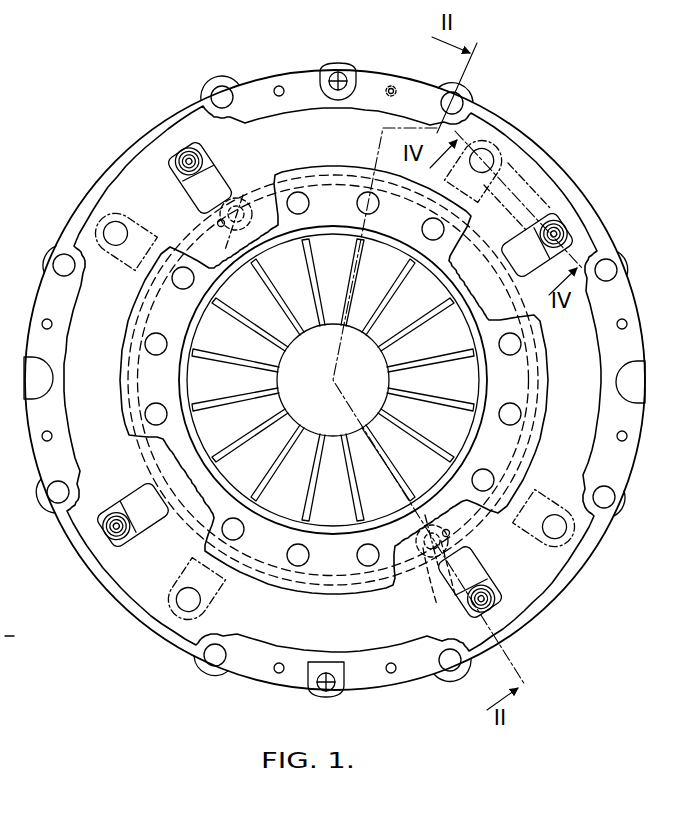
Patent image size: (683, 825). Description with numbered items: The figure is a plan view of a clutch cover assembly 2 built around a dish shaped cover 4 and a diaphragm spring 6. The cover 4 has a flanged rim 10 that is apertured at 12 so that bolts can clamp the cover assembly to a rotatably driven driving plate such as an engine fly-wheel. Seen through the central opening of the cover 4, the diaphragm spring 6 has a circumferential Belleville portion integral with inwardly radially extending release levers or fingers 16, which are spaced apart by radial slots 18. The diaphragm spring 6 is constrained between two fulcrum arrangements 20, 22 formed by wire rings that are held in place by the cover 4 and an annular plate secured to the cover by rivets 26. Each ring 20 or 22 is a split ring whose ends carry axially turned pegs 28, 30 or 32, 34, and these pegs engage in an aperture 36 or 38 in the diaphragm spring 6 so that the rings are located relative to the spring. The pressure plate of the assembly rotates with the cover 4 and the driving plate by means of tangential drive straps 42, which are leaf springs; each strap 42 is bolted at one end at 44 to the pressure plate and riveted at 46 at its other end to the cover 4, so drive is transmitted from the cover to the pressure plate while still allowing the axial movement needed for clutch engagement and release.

The clutch cover assembly 2 is at (527, 83).
The cover 4 is at (252, 63).
The diaphragm spring 6 is at (460, 382).
The flanged rim 10 is at (634, 341).
The apertures 12 is at (221, 97).
The release levers or fingers 16 is at (358, 348).
The radial slots 18 is at (415, 322).
The fulcrum arrangement 20 is at (214, 218).
The fulcrum arrangement 22 is at (437, 588).
The rivets 26 is at (363, 198).
The peg 28 is at (456, 539).
The peg 30 is at (398, 513).
The peg 32 is at (241, 219).
The peg 34 is at (213, 290).
The aperture 36 is at (440, 494).
The aperture 38 is at (234, 236).
The tangential drive straps 42 is at (540, 200).
The bolted end 44 is at (560, 232).
The riveted end 46 is at (115, 226).